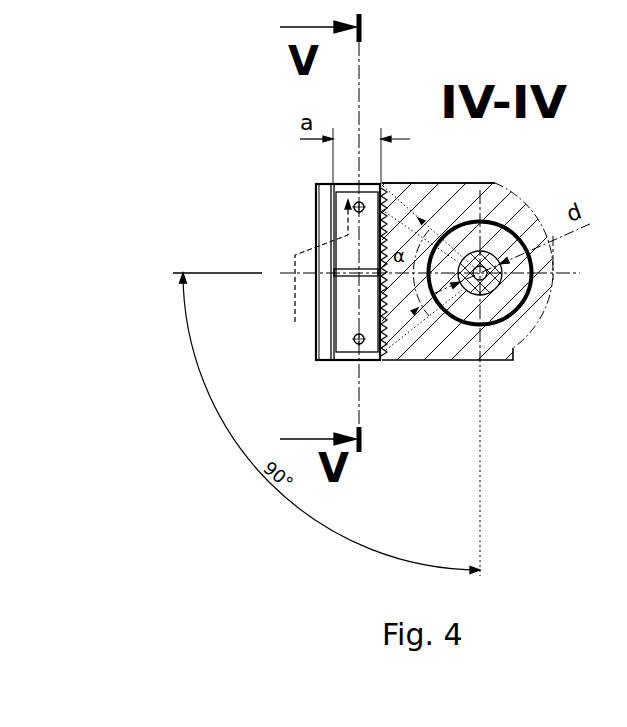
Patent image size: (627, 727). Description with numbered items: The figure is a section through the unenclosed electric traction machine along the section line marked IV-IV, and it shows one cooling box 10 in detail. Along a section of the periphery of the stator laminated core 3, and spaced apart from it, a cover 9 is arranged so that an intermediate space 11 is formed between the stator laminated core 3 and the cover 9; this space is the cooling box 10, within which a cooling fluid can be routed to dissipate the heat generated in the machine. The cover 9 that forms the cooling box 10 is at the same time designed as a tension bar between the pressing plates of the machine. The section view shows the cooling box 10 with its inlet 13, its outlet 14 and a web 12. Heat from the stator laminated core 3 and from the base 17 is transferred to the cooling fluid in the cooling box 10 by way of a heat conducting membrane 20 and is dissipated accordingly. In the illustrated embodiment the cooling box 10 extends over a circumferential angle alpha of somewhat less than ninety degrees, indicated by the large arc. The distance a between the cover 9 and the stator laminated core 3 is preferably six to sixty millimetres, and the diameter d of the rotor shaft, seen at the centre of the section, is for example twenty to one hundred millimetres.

The stator laminated core 3 is at (511, 198).
The cover 9 is at (318, 202).
The cooling box 10 is at (246, 238).
The intermediate space 11 is at (298, 111).
The web 12 is at (336, 277).
The inlet 13 is at (475, 163).
The outlet 14 is at (359, 273).
The base 17 is at (385, 363).
The heat conducting membrane 20 is at (473, 182).